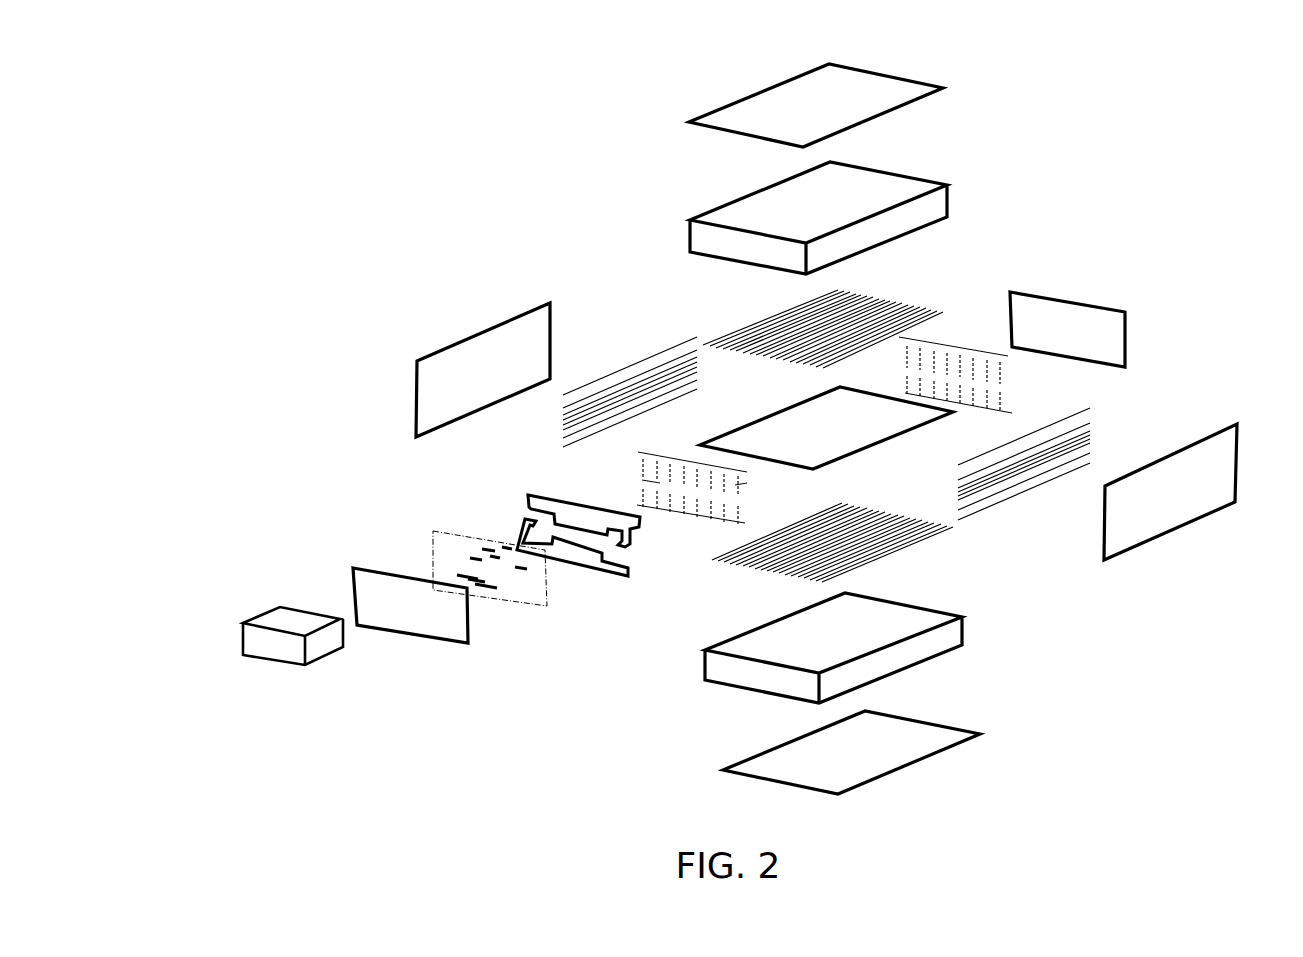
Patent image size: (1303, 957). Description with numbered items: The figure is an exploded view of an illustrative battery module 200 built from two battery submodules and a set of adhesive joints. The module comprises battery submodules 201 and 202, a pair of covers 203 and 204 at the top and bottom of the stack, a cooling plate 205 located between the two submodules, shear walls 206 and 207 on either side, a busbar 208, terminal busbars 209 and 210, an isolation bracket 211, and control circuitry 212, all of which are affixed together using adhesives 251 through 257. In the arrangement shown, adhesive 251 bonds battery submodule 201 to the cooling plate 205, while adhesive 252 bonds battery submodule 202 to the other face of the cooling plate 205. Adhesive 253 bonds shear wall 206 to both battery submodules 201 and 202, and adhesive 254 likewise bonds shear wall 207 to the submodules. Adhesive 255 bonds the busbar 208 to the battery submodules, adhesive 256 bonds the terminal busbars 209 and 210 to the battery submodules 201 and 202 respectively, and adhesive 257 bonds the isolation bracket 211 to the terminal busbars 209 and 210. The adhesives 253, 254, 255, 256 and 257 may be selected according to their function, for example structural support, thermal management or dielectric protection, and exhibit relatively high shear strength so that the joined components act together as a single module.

The battery module 200 is at (1215, 65).
The battery submodule 201 is at (799, 213).
The battery submodule 202 is at (812, 644).
The cover 203 is at (808, 114).
The cover 204 is at (834, 767).
The cooling plate 205 is at (812, 444).
The shear wall 206 is at (461, 382).
The shear wall 207 is at (1151, 507).
The busbar 208 is at (1045, 340).
The terminal busbar 209 is at (528, 503).
The terminal busbar 210 is at (522, 522).
The isolation bracket 211 is at (390, 616).
The control circuitry 212 is at (245, 641).
The adhesive 251 is at (906, 303).
The adhesive 252 is at (907, 543).
The adhesive 253 is at (617, 370).
The adhesive 254 is at (1090, 453).
The adhesive 255 is at (967, 350).
The adhesive 256 is at (697, 512).
The adhesive 257 is at (433, 557).